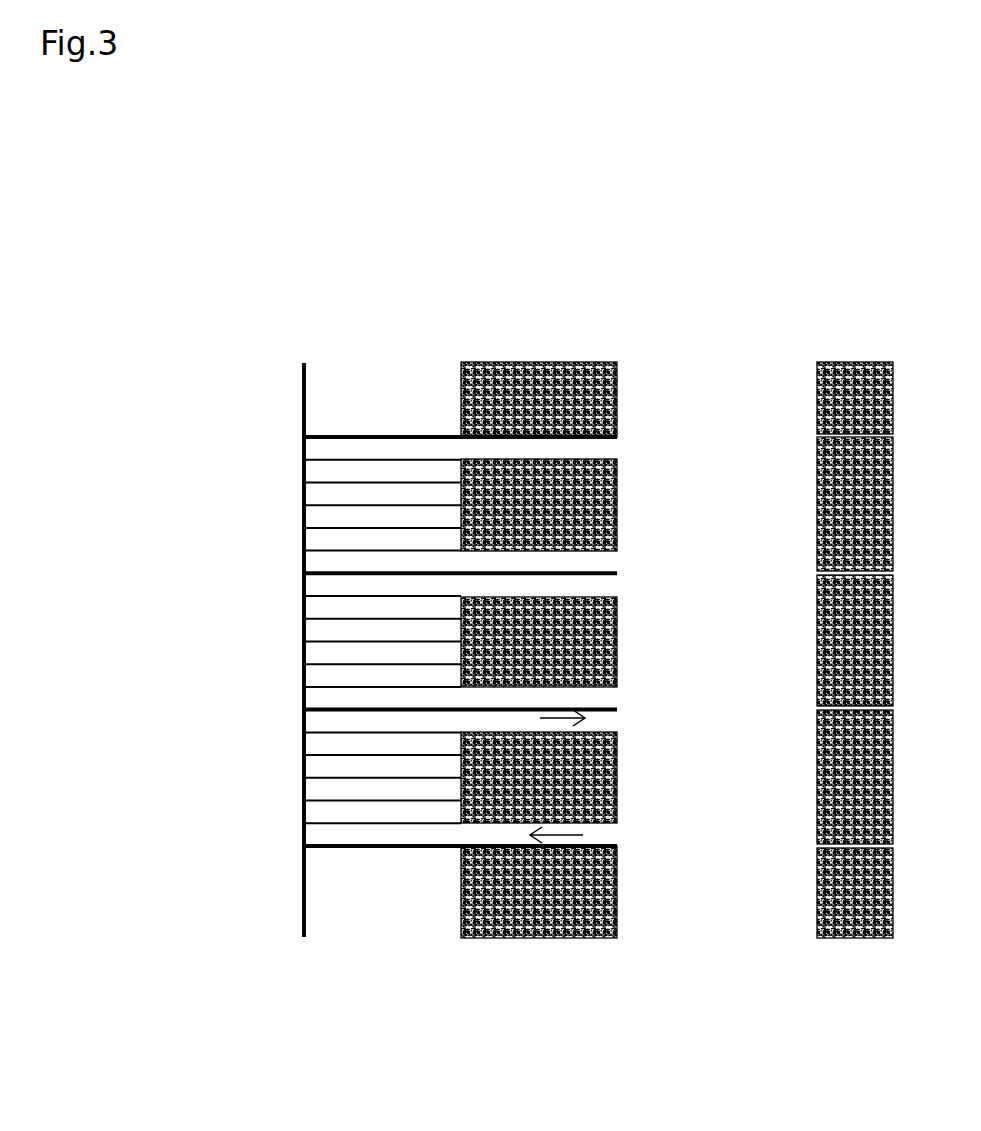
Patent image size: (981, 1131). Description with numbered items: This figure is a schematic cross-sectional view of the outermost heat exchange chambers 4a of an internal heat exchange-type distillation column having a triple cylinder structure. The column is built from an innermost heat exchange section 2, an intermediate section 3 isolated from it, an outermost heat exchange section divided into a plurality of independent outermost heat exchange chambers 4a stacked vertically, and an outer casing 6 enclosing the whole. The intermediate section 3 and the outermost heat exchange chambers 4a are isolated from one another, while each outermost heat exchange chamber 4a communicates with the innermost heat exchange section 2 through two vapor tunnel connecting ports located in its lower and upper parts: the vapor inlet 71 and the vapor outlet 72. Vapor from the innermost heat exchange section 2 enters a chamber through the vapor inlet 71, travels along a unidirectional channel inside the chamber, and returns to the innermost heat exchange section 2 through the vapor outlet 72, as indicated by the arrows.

The innermost heat exchange section 2 is at (746, 385).
The intermediate section 3 is at (560, 385).
The outermost heat exchange chambers 4a is at (332, 472).
The outer casing 6 is at (302, 387).
The vapor inlet 71 is at (605, 563).
The vapor outlet 72 is at (603, 448).